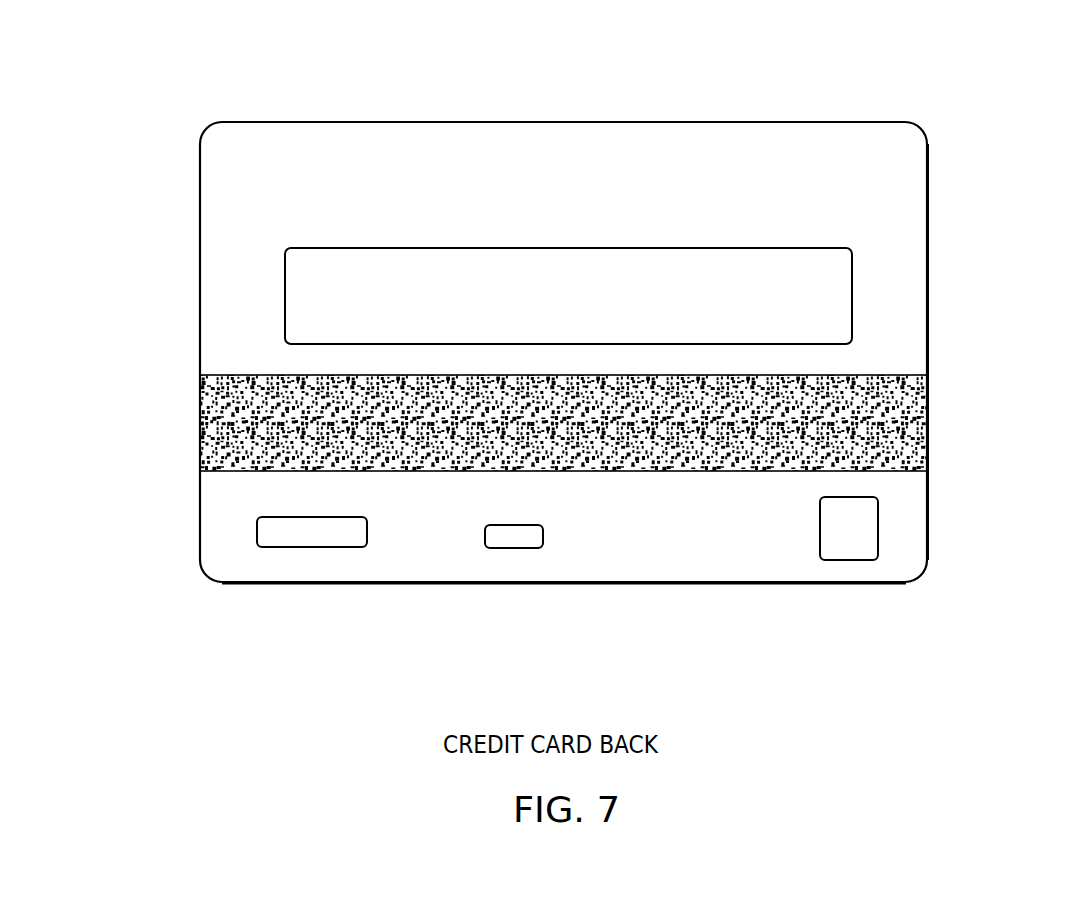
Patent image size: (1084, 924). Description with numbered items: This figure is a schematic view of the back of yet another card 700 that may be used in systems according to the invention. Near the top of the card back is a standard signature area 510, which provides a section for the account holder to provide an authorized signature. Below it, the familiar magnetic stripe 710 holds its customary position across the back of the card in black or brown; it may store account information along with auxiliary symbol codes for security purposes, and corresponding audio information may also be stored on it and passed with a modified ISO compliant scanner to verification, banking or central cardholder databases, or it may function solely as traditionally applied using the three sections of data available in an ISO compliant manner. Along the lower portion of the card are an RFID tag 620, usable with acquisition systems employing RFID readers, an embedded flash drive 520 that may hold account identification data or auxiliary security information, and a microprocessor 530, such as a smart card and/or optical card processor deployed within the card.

The card 700 is at (549, 122).
The signature area 510 is at (297, 300).
The magnetic stripe 710 is at (220, 421).
The RFID tag 620 is at (318, 548).
The embedded flash drive 520 is at (507, 548).
The microprocessor 530 is at (850, 548).